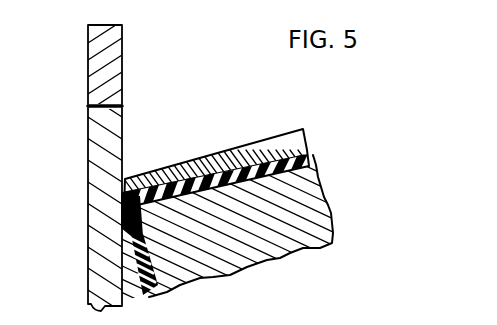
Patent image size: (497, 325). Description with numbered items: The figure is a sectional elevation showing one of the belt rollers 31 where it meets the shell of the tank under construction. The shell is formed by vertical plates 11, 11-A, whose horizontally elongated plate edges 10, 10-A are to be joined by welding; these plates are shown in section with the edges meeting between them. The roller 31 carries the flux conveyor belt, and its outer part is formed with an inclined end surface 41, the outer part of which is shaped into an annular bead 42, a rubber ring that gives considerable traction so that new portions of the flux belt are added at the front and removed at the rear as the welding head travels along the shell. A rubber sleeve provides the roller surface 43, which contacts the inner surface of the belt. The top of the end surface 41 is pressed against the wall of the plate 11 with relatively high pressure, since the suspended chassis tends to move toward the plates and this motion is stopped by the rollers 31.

The vertical plate 11-A is at (88, 63).
The plate edge 10 is at (95, 104).
The plate edge 10-A is at (98, 108).
The vertical plate 11 is at (88, 160).
The belt roller surface 43 is at (199, 181).
The belt roller 31 is at (332, 209).
The annular bead 42 is at (118, 262).
The inclined end surface 41 is at (165, 261).